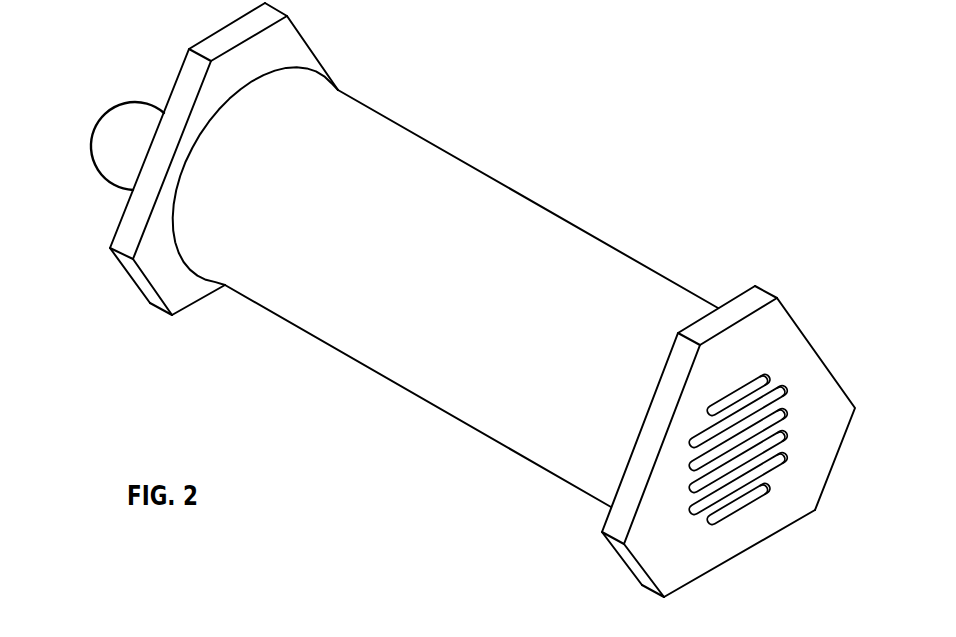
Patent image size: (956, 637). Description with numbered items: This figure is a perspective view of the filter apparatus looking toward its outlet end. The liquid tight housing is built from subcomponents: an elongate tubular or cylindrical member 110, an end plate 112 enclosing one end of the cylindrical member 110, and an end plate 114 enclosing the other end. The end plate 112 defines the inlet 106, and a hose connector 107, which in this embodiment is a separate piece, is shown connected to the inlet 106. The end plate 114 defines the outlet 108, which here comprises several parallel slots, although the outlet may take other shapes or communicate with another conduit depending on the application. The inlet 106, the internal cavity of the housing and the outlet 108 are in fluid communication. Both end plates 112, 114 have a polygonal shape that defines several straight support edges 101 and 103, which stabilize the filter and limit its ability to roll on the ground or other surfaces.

The straight support edge 101 is at (198, 303).
The straight support edge 103 is at (707, 572).
The inlet 106 is at (716, 0).
The hose connector 107 is at (120, 152).
The outlet 108 is at (765, 468).
The cylindrical member 110 is at (497, 190).
The end plate 112 is at (303, 48).
The end plate 114 is at (815, 365).